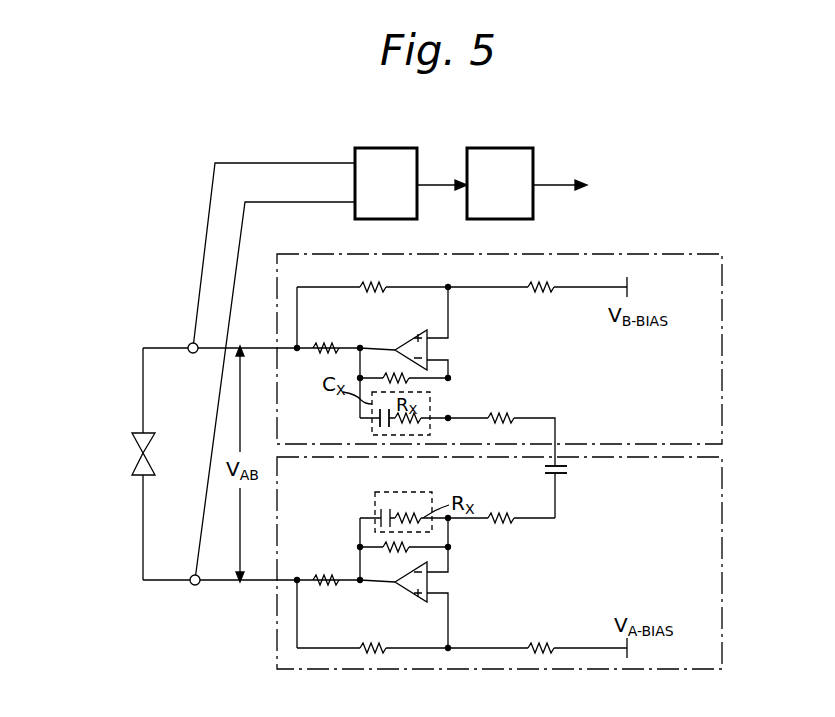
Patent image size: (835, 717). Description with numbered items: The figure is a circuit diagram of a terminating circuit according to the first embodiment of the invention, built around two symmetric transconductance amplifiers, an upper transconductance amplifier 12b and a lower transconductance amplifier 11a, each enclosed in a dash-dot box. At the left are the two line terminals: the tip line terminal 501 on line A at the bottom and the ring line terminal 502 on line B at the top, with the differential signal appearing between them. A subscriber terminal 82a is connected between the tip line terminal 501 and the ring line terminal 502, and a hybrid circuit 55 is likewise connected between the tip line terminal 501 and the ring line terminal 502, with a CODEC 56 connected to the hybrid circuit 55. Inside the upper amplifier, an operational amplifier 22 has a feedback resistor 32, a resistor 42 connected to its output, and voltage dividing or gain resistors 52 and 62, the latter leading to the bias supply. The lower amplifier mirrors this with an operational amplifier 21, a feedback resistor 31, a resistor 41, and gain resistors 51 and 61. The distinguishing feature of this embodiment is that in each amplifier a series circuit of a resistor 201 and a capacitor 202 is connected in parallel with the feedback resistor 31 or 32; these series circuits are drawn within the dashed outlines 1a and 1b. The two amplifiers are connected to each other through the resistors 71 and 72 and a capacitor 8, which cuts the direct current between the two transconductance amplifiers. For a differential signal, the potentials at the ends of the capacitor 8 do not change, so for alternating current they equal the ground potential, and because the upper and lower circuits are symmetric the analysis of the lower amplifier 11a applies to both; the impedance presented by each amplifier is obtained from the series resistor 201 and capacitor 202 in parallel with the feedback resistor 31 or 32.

The hybrid circuit 55 is at (397, 152).
The CODEC 56 is at (506, 152).
The ring line terminal 502 is at (189, 345).
The tip line terminal 501 is at (194, 586).
The subscriber terminal 82a is at (150, 450).
The transconductance amplifier 12b is at (725, 345).
The transconductance amplifier 11a is at (720, 547).
The voltage dividing resistor 52 is at (371, 292).
The voltage dividing resistor 62 is at (543, 300).
The resistor 42 is at (320, 354).
The operational amplifier 22 is at (415, 337).
The feedback resistor 32 is at (405, 379).
The sensor equivalent circuit 1b is at (432, 396).
The resistor 72 is at (516, 422).
The capacitor 202 is at (372, 430).
The resistor 201 is at (424, 423).
The capacitor 8 is at (567, 468).
The sensor equivalent circuit 1a is at (432, 496).
The resistor 71 is at (512, 522).
The feedback resistor 31 is at (405, 548).
The resistor 41 is at (324, 586).
The operational amplifier 21 is at (407, 598).
The voltage dividing resistor 51 is at (369, 654).
The voltage dividing resistor 61 is at (541, 655).